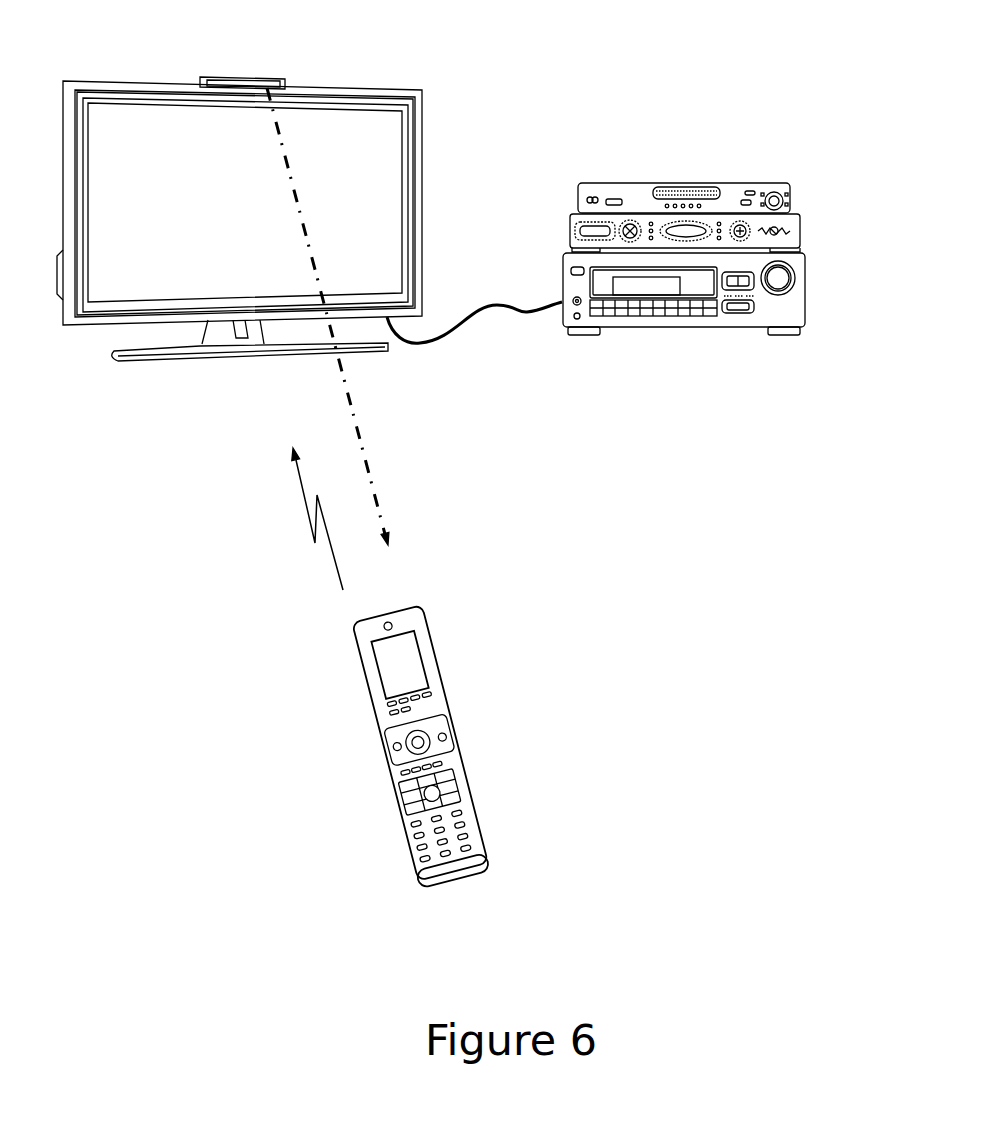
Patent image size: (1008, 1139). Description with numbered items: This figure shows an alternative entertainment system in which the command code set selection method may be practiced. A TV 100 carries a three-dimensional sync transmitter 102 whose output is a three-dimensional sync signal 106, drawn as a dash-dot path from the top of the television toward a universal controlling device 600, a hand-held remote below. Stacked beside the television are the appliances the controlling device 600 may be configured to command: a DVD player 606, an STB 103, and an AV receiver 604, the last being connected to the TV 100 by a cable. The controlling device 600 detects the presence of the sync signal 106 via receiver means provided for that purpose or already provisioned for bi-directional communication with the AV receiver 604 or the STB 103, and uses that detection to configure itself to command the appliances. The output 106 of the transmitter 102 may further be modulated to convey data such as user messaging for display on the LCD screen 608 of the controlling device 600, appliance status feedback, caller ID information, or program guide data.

The TV 100 is at (418, 92).
The 3D sync transmitter 102 is at (265, 82).
The STB 103 is at (800, 228).
The 3D sync signal 106 is at (352, 408).
The universal controlling device 600 is at (485, 878).
The AV receiver 604 is at (712, 332).
The DVD player 606 is at (788, 205).
The LCD screen 608 is at (403, 662).